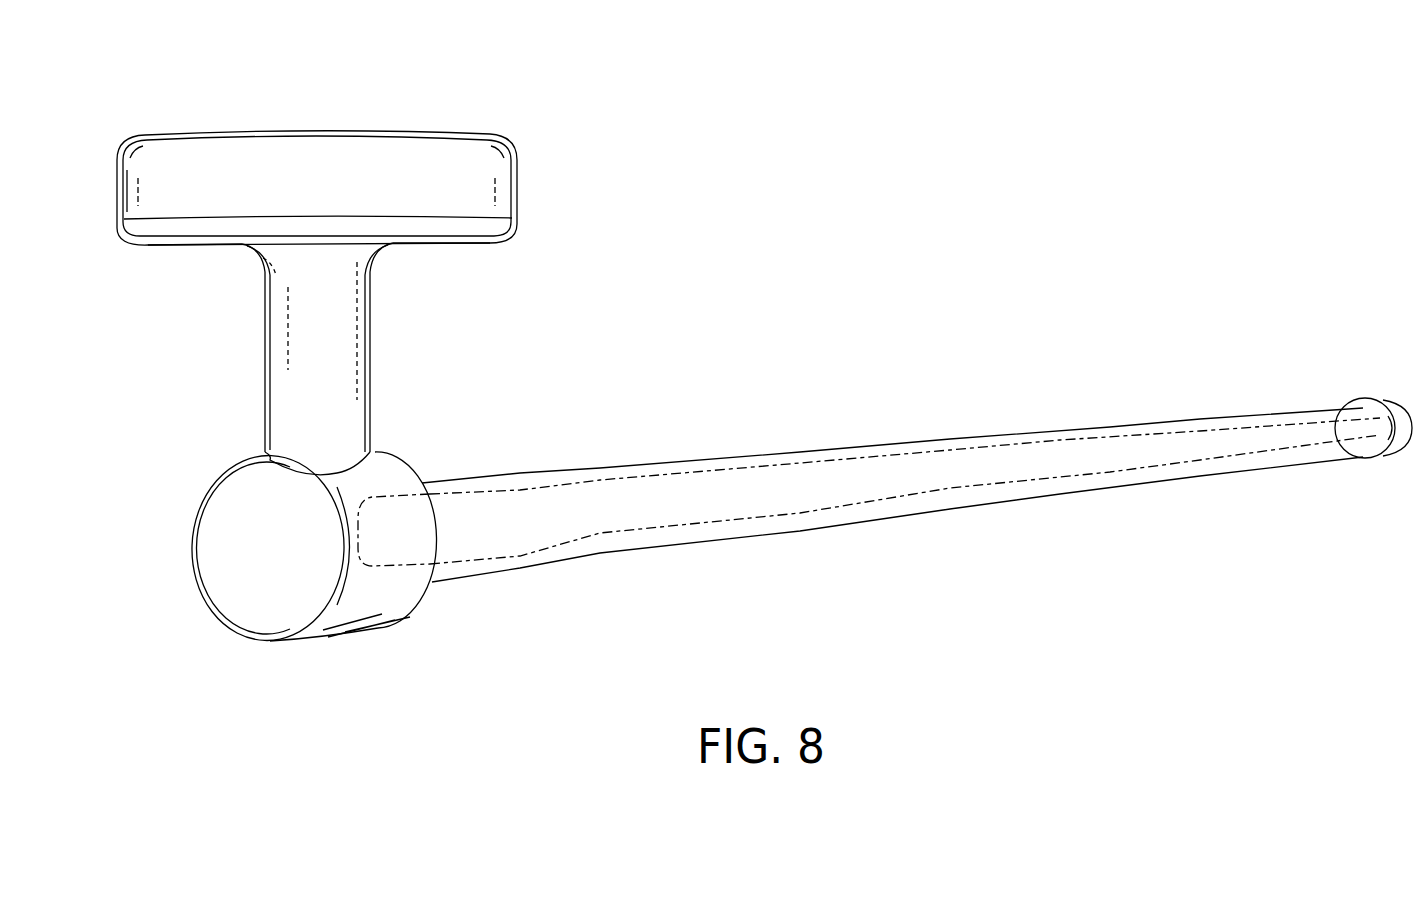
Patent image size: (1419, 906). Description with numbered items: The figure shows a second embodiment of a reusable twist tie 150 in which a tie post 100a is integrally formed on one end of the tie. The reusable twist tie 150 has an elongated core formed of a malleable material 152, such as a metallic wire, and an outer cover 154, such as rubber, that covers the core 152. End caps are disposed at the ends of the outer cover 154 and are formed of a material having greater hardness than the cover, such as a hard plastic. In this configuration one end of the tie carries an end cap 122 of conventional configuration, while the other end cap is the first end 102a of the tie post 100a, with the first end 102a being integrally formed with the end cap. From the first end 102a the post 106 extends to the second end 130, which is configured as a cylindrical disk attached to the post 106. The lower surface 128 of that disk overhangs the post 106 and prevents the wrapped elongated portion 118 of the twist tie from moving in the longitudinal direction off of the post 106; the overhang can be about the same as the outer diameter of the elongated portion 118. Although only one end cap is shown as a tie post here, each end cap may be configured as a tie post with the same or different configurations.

The tie post 100a is at (164, 88).
The second end 130 is at (540, 197).
The surface 128 is at (468, 247).
The post 106 is at (371, 329).
The first end 102a is at (194, 447).
The reusable twist tie 150 is at (1112, 106).
The elongated portion 118 is at (917, 511).
The outer cover 154 is at (842, 449).
The core of malleable material 152 is at (1003, 447).
The end cap 122 is at (1383, 453).